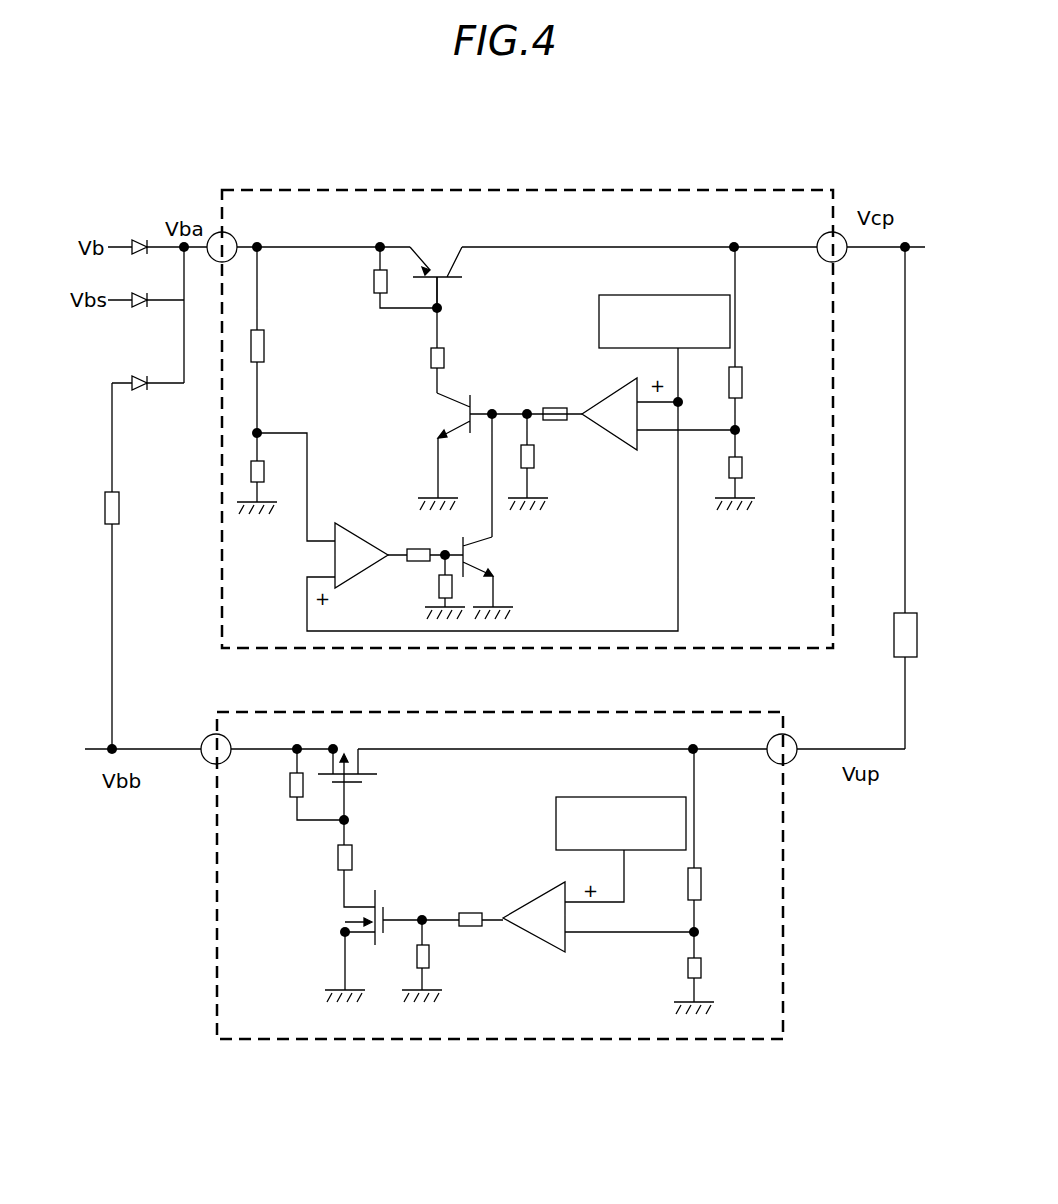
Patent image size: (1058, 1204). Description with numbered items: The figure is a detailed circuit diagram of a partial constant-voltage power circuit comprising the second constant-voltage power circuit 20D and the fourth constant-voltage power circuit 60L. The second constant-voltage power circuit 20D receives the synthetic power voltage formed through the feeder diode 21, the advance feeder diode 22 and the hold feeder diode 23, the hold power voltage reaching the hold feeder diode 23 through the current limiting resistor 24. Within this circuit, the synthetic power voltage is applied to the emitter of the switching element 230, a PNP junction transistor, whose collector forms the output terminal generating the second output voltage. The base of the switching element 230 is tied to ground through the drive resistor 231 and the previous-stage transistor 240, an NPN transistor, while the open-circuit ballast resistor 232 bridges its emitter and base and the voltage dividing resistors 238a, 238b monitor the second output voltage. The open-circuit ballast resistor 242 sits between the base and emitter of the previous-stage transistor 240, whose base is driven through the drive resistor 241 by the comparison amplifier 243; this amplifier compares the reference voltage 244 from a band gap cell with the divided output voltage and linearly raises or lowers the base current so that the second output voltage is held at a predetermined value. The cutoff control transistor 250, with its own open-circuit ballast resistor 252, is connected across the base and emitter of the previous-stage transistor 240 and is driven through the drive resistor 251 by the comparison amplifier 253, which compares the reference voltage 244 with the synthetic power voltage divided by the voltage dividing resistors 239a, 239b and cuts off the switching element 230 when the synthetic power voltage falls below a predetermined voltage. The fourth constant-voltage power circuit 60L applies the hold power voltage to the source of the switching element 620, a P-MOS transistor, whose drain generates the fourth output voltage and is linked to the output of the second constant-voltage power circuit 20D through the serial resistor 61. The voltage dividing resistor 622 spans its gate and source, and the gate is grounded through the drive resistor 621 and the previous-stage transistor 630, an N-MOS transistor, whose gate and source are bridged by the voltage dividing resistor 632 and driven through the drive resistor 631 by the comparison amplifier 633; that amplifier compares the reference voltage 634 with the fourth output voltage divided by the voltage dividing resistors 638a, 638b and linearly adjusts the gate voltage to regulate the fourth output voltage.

The second constant-voltage power circuit 20D is at (686, 189).
The fourth constant-voltage power circuit 60L is at (596, 712).
The feeder diode 21 is at (135, 234).
The advance feeder diode 22 is at (138, 312).
The hold feeder diode 23 is at (138, 398).
The current limiting resistor 24 is at (120, 508).
The serial resistor 61 is at (895, 646).
The switching element 230 is at (447, 283).
The drive resistor 231 is at (446, 357).
The open-circuit ballast resistor 232 is at (374, 283).
The voltage dividing resistor 238a is at (743, 382).
The voltage dividing resistor 238b is at (743, 466).
The voltage dividing resistor 239a is at (266, 347).
The voltage dividing resistor 239b is at (266, 472).
The previous-stage transistor 240 is at (440, 408).
The drive resistor 241 is at (552, 406).
The open-circuit ballast resistor 242 is at (536, 460).
The comparison amplifier 243 is at (603, 398).
The reference voltage 244 is at (650, 295).
The cutoff control transistor 250 is at (495, 557).
The drive resistor 251 is at (405, 547).
The open-circuit ballast resistor 252 is at (438, 590).
The comparison amplifier 253 is at (334, 562).
The switching element 620 is at (370, 780).
The drive resistor 621 is at (338, 857).
The voltage dividing resistor 622 is at (289, 785).
The previous-stage transistor 630 is at (330, 935).
The drive resistor 631 is at (470, 912).
The voltage dividing resistor 632 is at (432, 957).
The comparison amplifier 633 is at (553, 952).
The reference voltage 634 is at (556, 822).
The voltage dividing resistor 638a is at (703, 885).
The voltage dividing resistor 638b is at (703, 968).